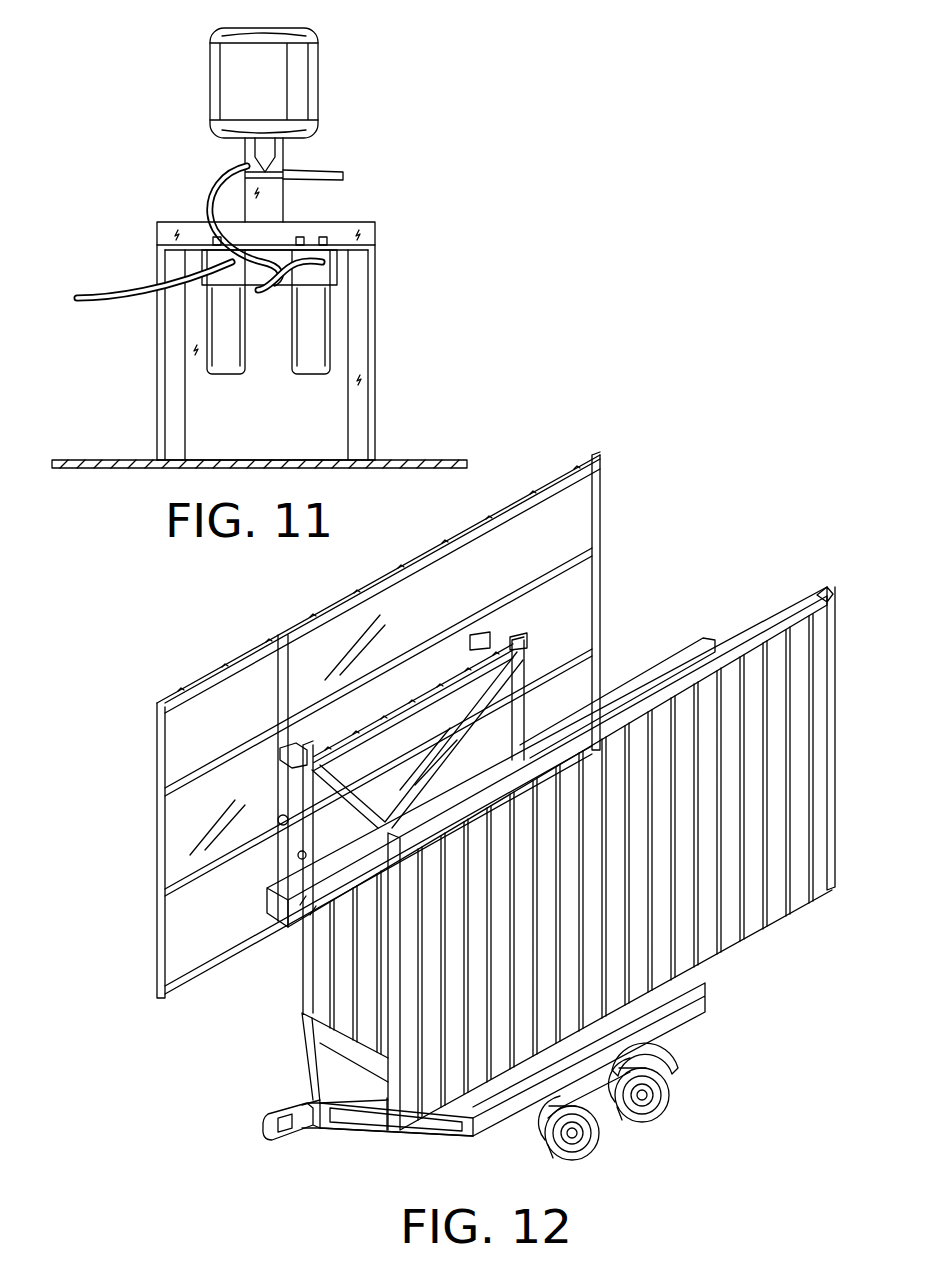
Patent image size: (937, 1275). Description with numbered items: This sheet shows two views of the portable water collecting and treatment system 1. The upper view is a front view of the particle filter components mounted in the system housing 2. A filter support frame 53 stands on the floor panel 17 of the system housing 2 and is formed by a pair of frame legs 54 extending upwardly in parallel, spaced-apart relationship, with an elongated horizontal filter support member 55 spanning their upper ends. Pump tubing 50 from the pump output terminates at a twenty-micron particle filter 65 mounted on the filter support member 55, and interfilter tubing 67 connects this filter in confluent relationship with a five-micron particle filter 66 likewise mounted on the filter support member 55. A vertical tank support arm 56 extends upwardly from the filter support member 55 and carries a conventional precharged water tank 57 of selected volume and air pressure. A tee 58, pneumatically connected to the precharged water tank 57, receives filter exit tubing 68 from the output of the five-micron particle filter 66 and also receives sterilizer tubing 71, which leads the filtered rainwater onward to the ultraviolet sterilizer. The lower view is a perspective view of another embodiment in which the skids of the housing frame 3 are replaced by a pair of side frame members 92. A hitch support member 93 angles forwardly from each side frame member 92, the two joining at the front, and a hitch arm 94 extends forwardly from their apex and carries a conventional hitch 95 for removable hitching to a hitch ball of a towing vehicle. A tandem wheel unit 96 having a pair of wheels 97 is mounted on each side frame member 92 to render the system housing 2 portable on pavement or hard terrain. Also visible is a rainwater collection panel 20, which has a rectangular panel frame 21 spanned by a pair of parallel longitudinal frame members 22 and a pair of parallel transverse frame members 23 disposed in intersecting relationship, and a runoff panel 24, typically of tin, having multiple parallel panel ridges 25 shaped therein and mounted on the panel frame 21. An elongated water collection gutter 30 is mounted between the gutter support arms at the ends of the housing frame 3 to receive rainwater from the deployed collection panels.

In FIG. 12, the portable water collecting and treatment system 1 is at (560, 452).
In FIG. 11, the system housing 2 is at (88, 458).
In FIG. 12, the system housing 2 is at (302, 1014).
In FIG. 12, the housing frame 3 is at (708, 987).
In FIG. 11, the floor panel 17 is at (128, 456).
In FIG. 12, the rainwater collection panel 20 is at (602, 492).
In FIG. 12, the panel frame 21 is at (155, 737).
In FIG. 12, the longitudinal frame members 22 is at (215, 857).
In FIG. 12, the transverse frame members 23 is at (293, 670).
In FIG. 12, the runoff panel 24 is at (818, 610).
In FIG. 12, the panel ridges 25 is at (765, 650).
In FIG. 12, the water collection gutter 30 is at (283, 913).
In FIG. 11, the pump tubing 50 is at (125, 292).
In FIG. 11, the filter support frame 53 is at (157, 256).
In FIG. 11, the frame legs 54 is at (350, 440).
In FIG. 11, the filter support member 55 is at (192, 225).
In FIG. 11, the tank support arm 56 is at (278, 205).
In FIG. 11, the precharged water tank 57 is at (240, 90).
In FIG. 11, the tee 58 is at (265, 178).
In FIG. 11, the 20-micron particle filter 65 is at (228, 360).
In FIG. 11, the 5-micron particle filter 66 is at (305, 360).
In FIG. 11, the interfilter tubing 67 is at (262, 300).
In FIG. 11, the filter exit tubing 68 is at (218, 180).
In FIG. 11, the sterilizer tubing 71 is at (330, 170).
In FIG. 12, the side frame members 92 is at (700, 1002).
In FIG. 12, the hitch support member 93 is at (312, 1058).
In FIG. 12, the hitch arm 94 is at (313, 1120).
In FIG. 12, the hitch 95 is at (262, 1132).
In FIG. 12, the tandem wheel unit 96 is at (515, 1131).
In FIG. 12, the wheels 97 is at (653, 1113).